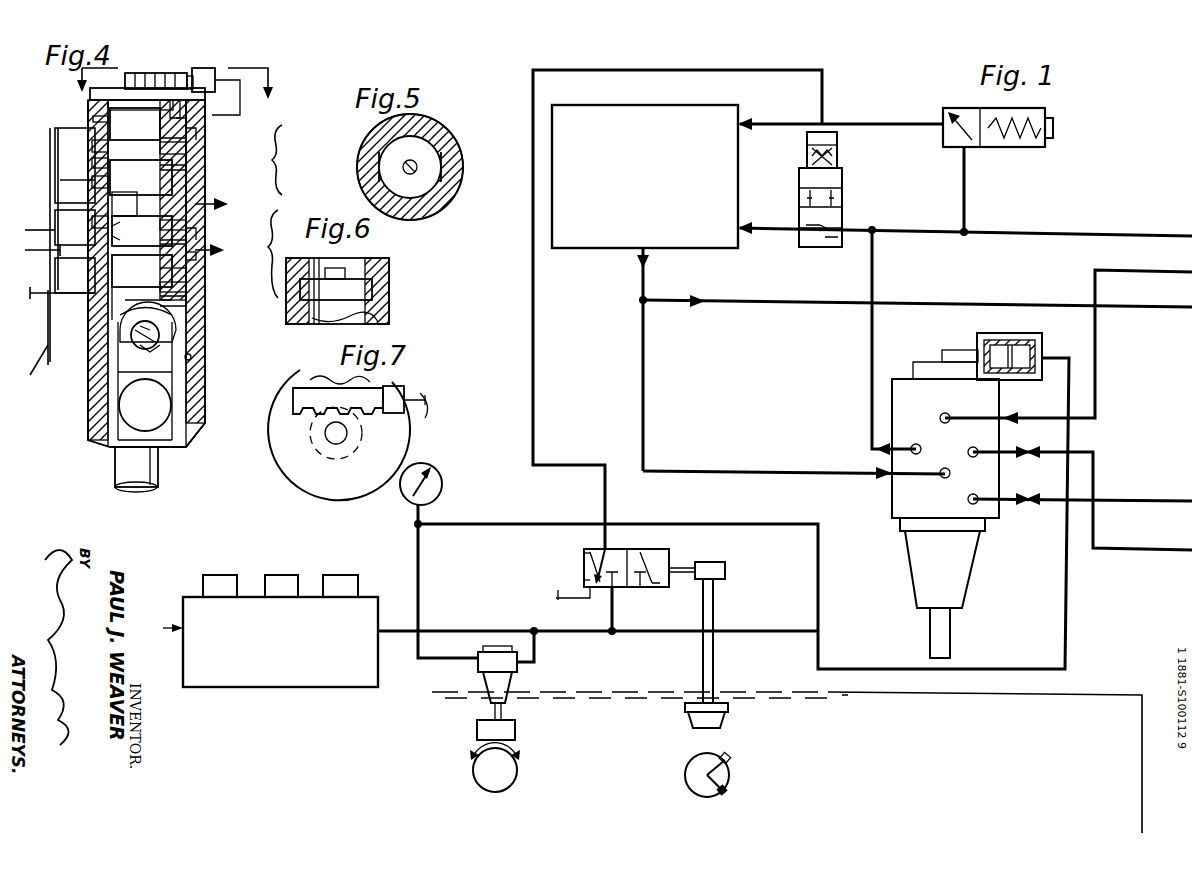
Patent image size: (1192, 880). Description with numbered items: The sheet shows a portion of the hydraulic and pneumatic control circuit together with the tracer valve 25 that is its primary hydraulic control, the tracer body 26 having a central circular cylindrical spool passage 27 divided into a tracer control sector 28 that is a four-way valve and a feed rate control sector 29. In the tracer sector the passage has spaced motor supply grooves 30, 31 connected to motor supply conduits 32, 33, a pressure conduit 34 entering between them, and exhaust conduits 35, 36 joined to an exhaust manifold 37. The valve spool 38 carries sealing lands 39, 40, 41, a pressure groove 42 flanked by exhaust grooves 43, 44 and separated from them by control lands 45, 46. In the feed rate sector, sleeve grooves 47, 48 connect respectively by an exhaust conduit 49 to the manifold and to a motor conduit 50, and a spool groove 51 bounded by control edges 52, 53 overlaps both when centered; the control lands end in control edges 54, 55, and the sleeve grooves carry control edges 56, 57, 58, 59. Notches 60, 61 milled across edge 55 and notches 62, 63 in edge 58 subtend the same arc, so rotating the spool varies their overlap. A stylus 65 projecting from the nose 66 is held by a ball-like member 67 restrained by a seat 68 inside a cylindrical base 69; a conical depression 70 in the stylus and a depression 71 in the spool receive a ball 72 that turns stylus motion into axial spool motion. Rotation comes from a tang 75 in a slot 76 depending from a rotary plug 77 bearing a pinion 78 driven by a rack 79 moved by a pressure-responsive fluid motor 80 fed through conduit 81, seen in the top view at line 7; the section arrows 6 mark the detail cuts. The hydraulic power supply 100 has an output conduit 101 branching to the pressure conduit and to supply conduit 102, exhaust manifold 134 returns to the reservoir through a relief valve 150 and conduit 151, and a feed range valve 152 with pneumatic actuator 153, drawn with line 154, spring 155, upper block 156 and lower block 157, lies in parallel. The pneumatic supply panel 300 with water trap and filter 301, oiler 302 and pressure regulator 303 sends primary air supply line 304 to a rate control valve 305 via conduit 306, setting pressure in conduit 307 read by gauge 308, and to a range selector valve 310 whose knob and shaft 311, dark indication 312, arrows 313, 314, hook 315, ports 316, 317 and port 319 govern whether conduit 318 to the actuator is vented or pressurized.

In FIG. 1, the hydraulic power supply 100 is at (645, 176).
In FIG. 1, the output conduit 101 is at (640, 287).
In FIG. 1, the supply conduit 102 is at (778, 306).
In FIG. 1, the exhaust manifold 134 is at (1174, 230).
In FIG. 1, the relief valve 150 is at (1035, 147).
In FIG. 1, the conduit 151 is at (866, 127).
In FIG. 1, the feed range valve 152 is at (846, 197).
In FIG. 1, the pneumatic actuator 153 is at (840, 154).
In FIG. 1, the line 154 is at (808, 150).
In FIG. 1, the spring 155 is at (808, 160).
In FIG. 1, the upper block 156 is at (800, 198).
In FIG. 1, the valve section 157 is at (802, 240).
In FIG. 1, the tracer valve 25 is at (888, 495).
In FIG. 4, the tracer valve 25 is at (86, 443).
In FIG. 4, the tracer body 26 is at (90, 400).
In FIG. 4, the spool passage 27 is at (190, 355).
In FIG. 4, the tracer control sector 28 is at (285, 254).
In FIG. 4, the feed rate control sector 29 is at (291, 160).
In FIG. 4, the motor supply groove 30 is at (195, 232).
In FIG. 6, the motor supply groove 30 is at (385, 298).
In FIG. 4, the motor supply groove 31 is at (200, 256).
In FIG. 1, the motor supply conduit 32 is at (1170, 499).
In FIG. 4, the motor supply conduit 32 is at (38, 226).
In FIG. 1, the motor supply conduit 33 is at (1170, 548).
In FIG. 4, the motor supply conduit 33 is at (58, 292).
In FIG. 1, the pressure conduit 34 is at (792, 470).
In FIG. 4, the pressure conduit 34 is at (60, 250).
In FIG. 4, the exhaust conduit 35 is at (90, 222).
In FIG. 4, the exhaust conduit 36 is at (60, 300).
In FIG. 1, the exhaust manifold 37 is at (870, 338).
In FIG. 4, the exhaust manifold 37 is at (45, 330).
In FIG. 4, the valve spool 38 is at (130, 310).
In FIG. 4, the sealing land 39 is at (135, 124).
In FIG. 4, the sealing land 40 is at (141, 177).
In FIG. 4, the sealing land 41 is at (175, 330).
In FIG. 4, the pressure groove 42 is at (180, 243).
In FIG. 4, the exhaust groove 43 is at (185, 190).
In FIG. 4, the exhaust groove 44 is at (172, 320).
In FIG. 4, the control land 45 is at (142, 231).
In FIG. 4, the control land 46 is at (142, 271).
In FIG. 4, the sleeve groove 47 is at (95, 118).
In FIG. 4, the sleeve groove 48 is at (92, 160).
In FIG. 4, the exhaust conduit 49 is at (58, 126).
In FIG. 1, the motor conduit 50 is at (1052, 420).
In FIG. 4, the motor conduit 50 is at (92, 185).
In FIG. 4, the spool groove 51 is at (200, 147).
In FIG. 4, the control edge 52 is at (188, 143).
In FIG. 4, the control edge 53 is at (95, 150).
In FIG. 4, the control edge 54 is at (124, 204).
In FIG. 4, the control edge 55 is at (180, 305).
In FIG. 5, the control edge 55 is at (425, 135).
In FIG. 4, the control edge 56 is at (196, 132).
In FIG. 4, the control edge 57 is at (188, 175).
In FIG. 4, the control edge 58 is at (190, 222).
In FIG. 6, the control edge 58 is at (372, 285).
In FIG. 4, the control edge 59 is at (180, 272).
In FIG. 4, the notch 60 is at (180, 290).
In FIG. 5, the notch 60 is at (440, 167).
In FIG. 4, the notch 61 is at (122, 296).
In FIG. 5, the notch 61 is at (380, 167).
In FIG. 6, the notch 62 is at (342, 270).
In FIG. 4, the notch 63 is at (124, 230).
In FIG. 4, the stylus 65 is at (120, 468).
In FIG. 4, the nose 66 is at (190, 440).
In FIG. 4, the ball-like member 67 is at (160, 410).
In FIG. 4, the seat 68 is at (175, 422).
In FIG. 4, the cylindrical base 69 is at (140, 360).
In FIG. 4, the conical depression 70 is at (160, 352).
In FIG. 4, the depression 71 is at (160, 348).
In FIG. 4, the ball 72 is at (150, 328).
In FIG. 4, the tang 75 is at (180, 110).
In FIG. 4, the slot 76 is at (186, 124).
In FIG. 4, the rotary plug 77 is at (90, 95).
In FIG. 4, the pinion 78 is at (162, 73).
In FIG. 7, the pinion 78 is at (318, 440).
In FIG. 4, the rack 79 is at (188, 75).
In FIG. 7, the rack 79 is at (300, 388).
In FIG. 1, the pressure-responsive fluid motor 80 is at (1042, 338).
In FIG. 4, the pressure-responsive fluid motor 80 is at (208, 69).
In FIG. 7, the pressure-responsive fluid motor 80 is at (405, 392).
In FIG. 1, the conduit 81 is at (1066, 553).
In FIG. 4, the conduit 81 is at (225, 80).
In FIG. 7, the conduit 81 is at (424, 408).
In FIG. 4, the line 7— 7 is at (176, 83).
In FIG. 4, the section arrows 6 is at (218, 227).
In FIG. 1, the pneumatic supply panel 300 is at (292, 690).
In FIG. 1, the automatic water trap and filter 301 is at (208, 576).
In FIG. 1, the oiler 302 is at (282, 576).
In FIG. 1, the pressure regulator 303 is at (340, 576).
In FIG. 1, the primary air supply line 304 is at (390, 640).
In FIG. 1, the rate control valve 305 is at (510, 681).
In FIG. 1, the conduit 306 is at (535, 658).
In FIG. 1, the conduit 307 is at (418, 598).
In FIG. 1, the gauge 308 is at (443, 496).
In FIG. 1, the range selector valve 310 is at (636, 544).
In FIG. 1, the control knob and shaft 311 is at (690, 722).
In FIG. 1, the dark indication 312 is at (652, 690).
In FIG. 1, the arrow 313 is at (584, 553).
In FIG. 1, the arrow 314 is at (678, 561).
In FIG. 1, the hook 315 is at (556, 598).
In FIG. 1, the port 316 is at (584, 586).
In FIG. 1, the port 317 is at (616, 592).
In FIG. 1, the conduit 318 is at (545, 466).
In FIG. 1, the port 319 is at (605, 549).